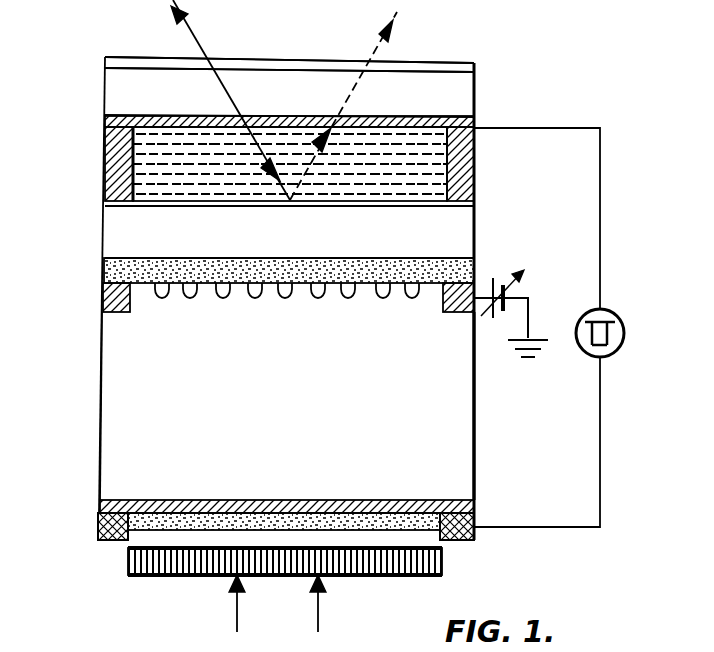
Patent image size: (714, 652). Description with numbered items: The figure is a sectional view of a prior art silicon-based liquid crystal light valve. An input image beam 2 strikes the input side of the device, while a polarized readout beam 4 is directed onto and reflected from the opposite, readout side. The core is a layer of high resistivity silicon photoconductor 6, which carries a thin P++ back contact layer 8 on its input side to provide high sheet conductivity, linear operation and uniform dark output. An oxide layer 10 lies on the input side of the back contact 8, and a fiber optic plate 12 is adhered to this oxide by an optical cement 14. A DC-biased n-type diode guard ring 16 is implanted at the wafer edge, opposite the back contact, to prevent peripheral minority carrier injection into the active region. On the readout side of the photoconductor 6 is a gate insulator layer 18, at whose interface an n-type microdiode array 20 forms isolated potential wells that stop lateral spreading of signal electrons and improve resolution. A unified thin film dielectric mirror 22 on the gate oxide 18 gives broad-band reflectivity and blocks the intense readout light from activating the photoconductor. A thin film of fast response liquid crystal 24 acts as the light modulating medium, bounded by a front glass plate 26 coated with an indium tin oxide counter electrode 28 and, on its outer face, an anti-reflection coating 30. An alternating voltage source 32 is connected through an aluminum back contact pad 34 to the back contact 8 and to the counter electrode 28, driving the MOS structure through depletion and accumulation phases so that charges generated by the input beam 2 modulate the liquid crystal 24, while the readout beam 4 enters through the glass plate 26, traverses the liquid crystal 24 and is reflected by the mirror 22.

The input image beam 2 is at (320, 590).
The readout beam 4 is at (200, 43).
The silicon photoconductor 6 is at (113, 408).
The back contact layer 8 is at (100, 507).
The oxide layer 10 is at (128, 545).
The fiber optic plate 12 is at (190, 576).
The optical cement 14 is at (163, 535).
The diode guard ring 16 is at (108, 297).
The gate insulator layer 18 is at (106, 268).
The microdiode array 20 is at (222, 300).
The dielectric mirror 22 is at (476, 230).
The liquid crystal 24 is at (430, 167).
The front glass plate 26 is at (467, 92).
The counter electrode 28 is at (477, 118).
The anti-reflection coating 30 is at (477, 63).
The alternating voltage source 32 is at (619, 349).
The back contact pad 34 is at (448, 548).